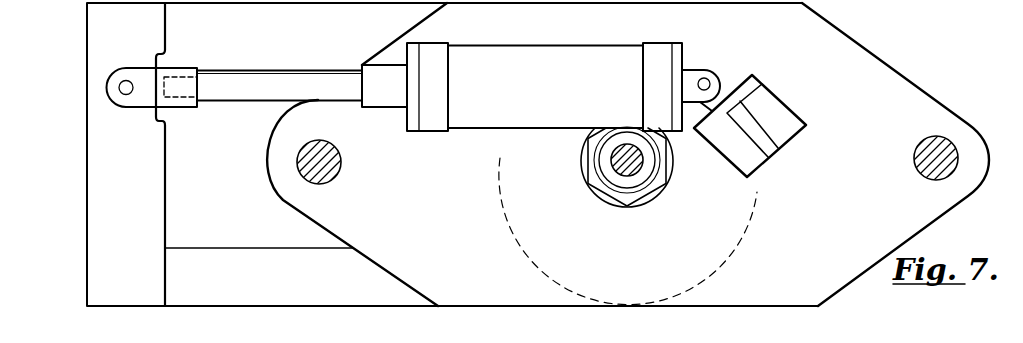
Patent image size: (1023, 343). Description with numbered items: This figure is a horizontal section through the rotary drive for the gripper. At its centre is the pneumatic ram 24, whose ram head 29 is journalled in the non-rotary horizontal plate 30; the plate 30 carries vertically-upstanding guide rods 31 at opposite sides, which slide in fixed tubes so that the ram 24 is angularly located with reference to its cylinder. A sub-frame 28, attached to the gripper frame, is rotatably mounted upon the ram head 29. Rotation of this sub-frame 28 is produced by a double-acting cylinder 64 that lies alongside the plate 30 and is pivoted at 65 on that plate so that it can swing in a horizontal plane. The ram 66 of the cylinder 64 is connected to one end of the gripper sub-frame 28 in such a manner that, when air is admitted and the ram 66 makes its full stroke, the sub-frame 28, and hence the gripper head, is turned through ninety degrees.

The pneumatic ram 24 is at (638, 172).
The sub-frame 28 is at (283, 281).
The ram head 29 is at (608, 178).
The horizontal plate 30 is at (858, 257).
The guide rods 31 is at (341, 157).
The double-acting cylinder 64 is at (541, 87).
The pivot 65 is at (730, 86).
The ram 66 is at (262, 78).